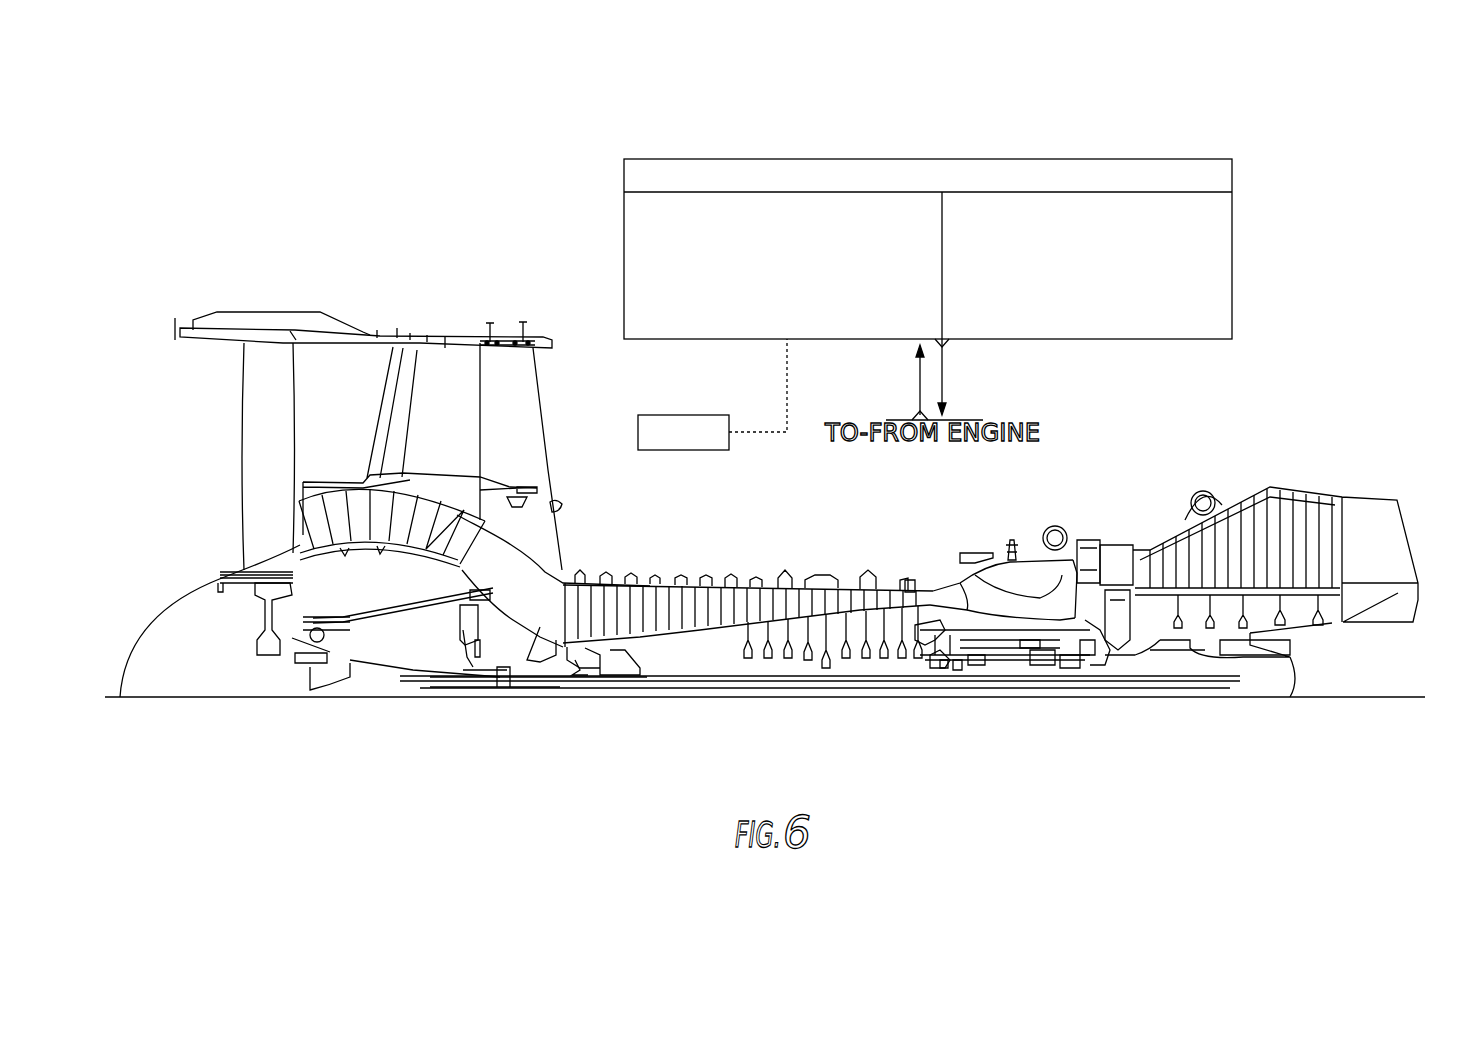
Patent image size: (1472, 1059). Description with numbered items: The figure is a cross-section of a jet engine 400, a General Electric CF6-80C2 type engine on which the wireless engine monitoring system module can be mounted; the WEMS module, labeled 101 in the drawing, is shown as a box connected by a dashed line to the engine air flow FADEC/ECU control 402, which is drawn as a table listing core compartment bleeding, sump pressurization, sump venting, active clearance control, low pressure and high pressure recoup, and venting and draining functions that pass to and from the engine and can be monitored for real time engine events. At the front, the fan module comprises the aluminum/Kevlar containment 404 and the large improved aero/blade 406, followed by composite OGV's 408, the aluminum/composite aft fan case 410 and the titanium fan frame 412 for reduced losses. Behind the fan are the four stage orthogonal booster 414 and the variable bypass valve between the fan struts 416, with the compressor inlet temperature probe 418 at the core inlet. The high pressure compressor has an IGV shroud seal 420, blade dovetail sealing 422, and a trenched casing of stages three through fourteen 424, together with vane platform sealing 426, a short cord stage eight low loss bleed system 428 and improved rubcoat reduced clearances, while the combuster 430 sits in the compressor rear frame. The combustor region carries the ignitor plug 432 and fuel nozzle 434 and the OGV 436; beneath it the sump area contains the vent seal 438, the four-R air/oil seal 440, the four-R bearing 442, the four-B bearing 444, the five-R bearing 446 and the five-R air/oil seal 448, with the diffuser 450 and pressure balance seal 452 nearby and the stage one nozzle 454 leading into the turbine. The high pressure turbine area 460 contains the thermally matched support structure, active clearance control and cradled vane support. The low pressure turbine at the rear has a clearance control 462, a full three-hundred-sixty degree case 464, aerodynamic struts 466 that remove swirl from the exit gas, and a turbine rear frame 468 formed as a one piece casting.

The WEMS 101 is at (682, 415).
The jet engine 400 is at (347, 291).
The engine air flow FADEC/ECU control 402 is at (871, 153).
The aluminum/Kevlar containment 404 is at (258, 325).
The improved aero/blade 406 is at (263, 455).
The composite OGV's 408 is at (426, 370).
The aluminum/composite aft fan case 410 is at (548, 337).
The titanium fan frame 412 is at (529, 418).
The four stage orthogonal booster 414 is at (480, 523).
The variable bypass valve between the fan struts 416 is at (507, 548).
The compressor inlet temperature probe 418 is at (540, 627).
The IGV shroud seal 420 is at (587, 637).
The blade dovetail sealing 422 is at (692, 650).
The trenched casing of stages 3-14 424 is at (718, 718).
The vane platform sealing 426 is at (765, 585).
The short cord stage 8 low loss bleed system 428 is at (820, 583).
The combuster 430 is at (718, 718).
The ignitor plug 432 is at (1012, 543).
The fuel nozzle 434 is at (965, 560).
The OGV 436 is at (913, 575).
The vent seal 438 is at (937, 653).
The 4R/A/O seal 440 is at (943, 657).
The 4R bearing 442 is at (955, 667).
The 4B bearing 444 is at (973, 670).
The 5R bearing 446 is at (1043, 663).
The 5R/A/O seal 448 is at (1073, 667).
The diffuser 450 is at (1083, 652).
The pressure balance seal 452 is at (1093, 665).
The stage 1 nozzle 454 is at (1077, 573).
The high pressure turbine area 460 is at (1113, 570).
The clearance control 462 is at (1183, 512).
The 360° case 464 is at (1313, 493).
The aerodynamic struts 466 is at (1375, 537).
The turbine rear frame 468 is at (1378, 622).